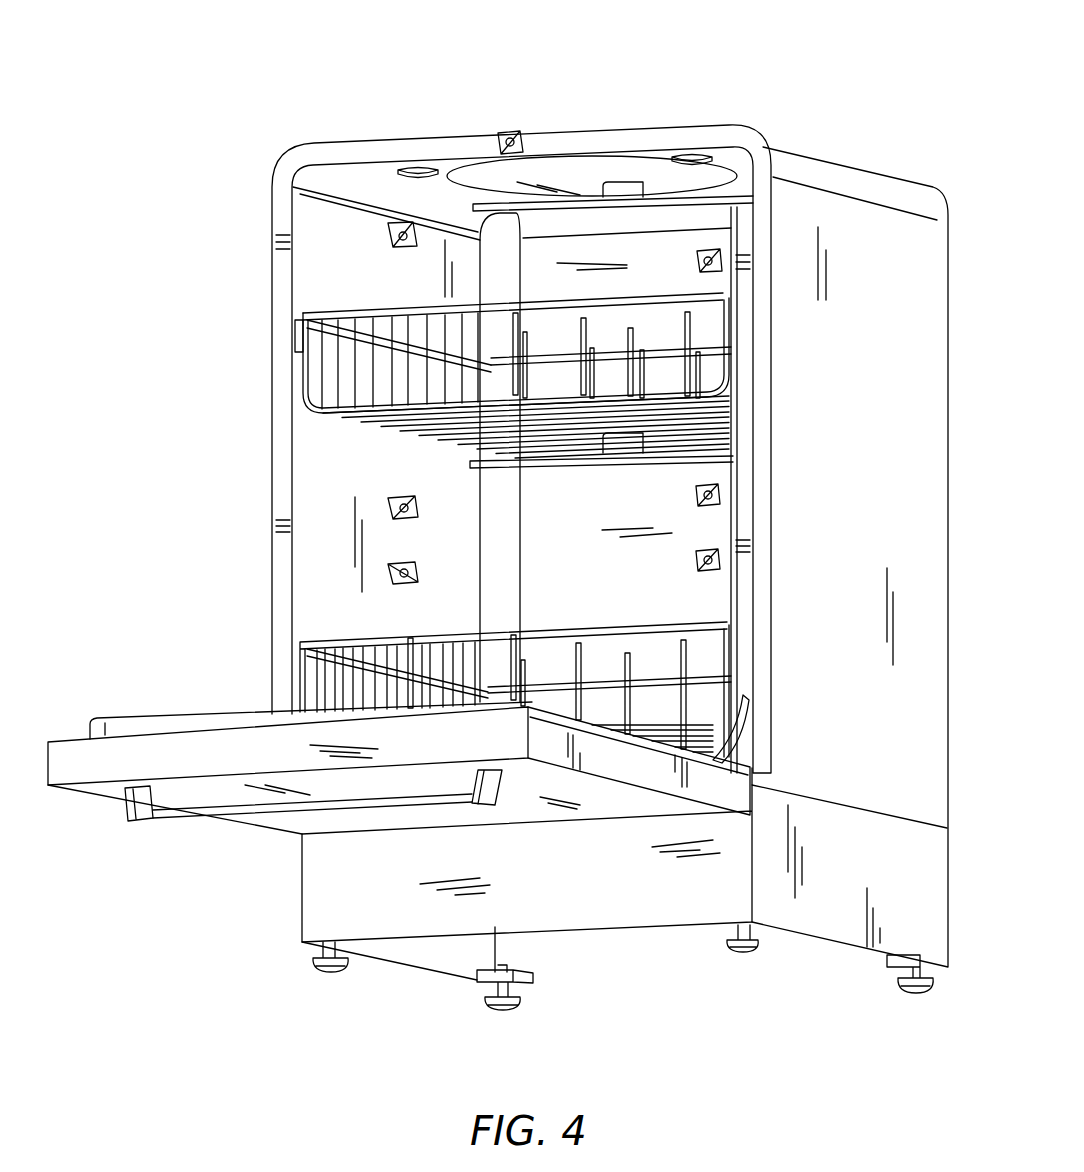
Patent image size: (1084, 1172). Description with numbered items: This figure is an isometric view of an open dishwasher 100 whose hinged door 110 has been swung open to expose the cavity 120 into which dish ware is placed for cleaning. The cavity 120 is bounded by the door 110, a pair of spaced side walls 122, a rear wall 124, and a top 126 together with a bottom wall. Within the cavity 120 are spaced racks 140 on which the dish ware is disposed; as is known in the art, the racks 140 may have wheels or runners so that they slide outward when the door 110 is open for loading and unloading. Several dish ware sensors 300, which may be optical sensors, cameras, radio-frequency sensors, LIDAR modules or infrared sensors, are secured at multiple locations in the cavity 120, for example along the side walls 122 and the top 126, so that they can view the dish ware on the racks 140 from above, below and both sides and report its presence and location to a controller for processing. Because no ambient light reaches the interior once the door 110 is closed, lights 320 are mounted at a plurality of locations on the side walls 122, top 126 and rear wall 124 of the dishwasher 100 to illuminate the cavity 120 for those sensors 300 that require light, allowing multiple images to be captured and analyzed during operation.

The dishwasher 100 is at (825, 205).
The hinged door 110 is at (87, 767).
The cavity 120 is at (353, 447).
The side walls 122 is at (313, 488).
The rear wall 124 is at (668, 597).
The top 126 is at (388, 166).
The rack 140 is at (613, 298).
The dish ware sensor 300 is at (703, 250).
The lights 320 is at (420, 168).